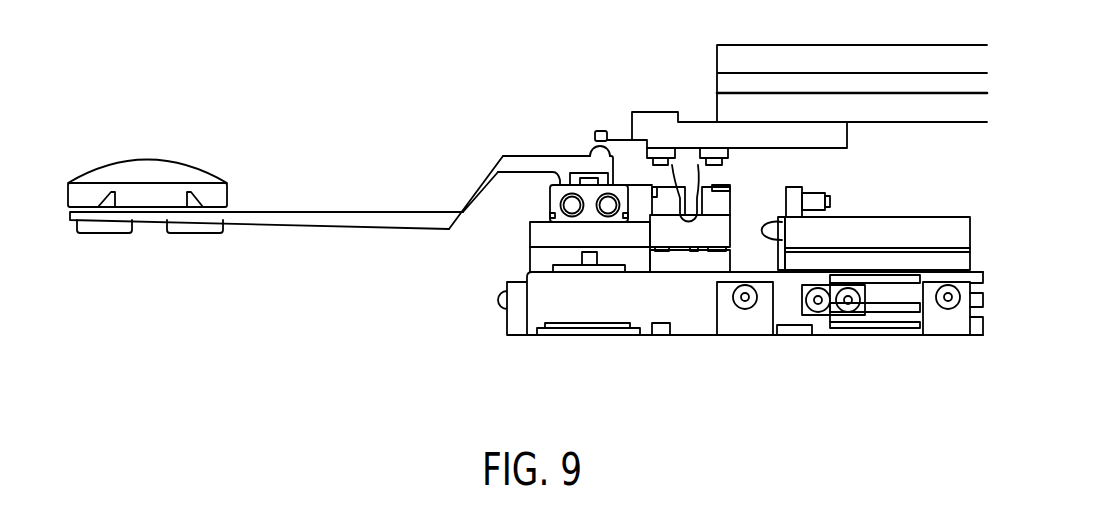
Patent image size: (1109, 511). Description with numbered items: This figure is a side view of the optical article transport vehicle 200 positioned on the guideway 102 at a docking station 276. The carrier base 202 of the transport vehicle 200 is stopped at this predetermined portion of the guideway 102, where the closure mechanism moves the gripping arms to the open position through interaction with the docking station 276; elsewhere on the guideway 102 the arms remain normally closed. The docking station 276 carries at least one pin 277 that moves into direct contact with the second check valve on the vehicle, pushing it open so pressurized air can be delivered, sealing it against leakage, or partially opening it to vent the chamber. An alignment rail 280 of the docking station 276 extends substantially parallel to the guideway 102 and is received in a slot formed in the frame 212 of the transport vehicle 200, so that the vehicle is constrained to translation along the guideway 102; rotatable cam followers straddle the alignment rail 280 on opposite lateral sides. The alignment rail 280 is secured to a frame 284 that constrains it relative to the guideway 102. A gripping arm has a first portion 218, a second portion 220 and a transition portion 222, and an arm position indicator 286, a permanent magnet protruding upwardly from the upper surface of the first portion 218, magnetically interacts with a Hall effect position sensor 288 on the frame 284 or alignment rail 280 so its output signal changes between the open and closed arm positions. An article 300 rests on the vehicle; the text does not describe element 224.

The guideway 102 is at (587, 307).
The transport vehicle 200 is at (503, 93).
The carrier base 202 is at (537, 228).
The frame 212 is at (289, 212).
The first portion 218 is at (512, 162).
The second portion 220 is at (377, 208).
The transition portion 222 is at (483, 177).
The alignment feature 224 is at (196, 186).
The docking station 276 is at (855, 196).
The pin 277 is at (768, 232).
The alignment rail 280 is at (690, 186).
The frame 284 is at (700, 121).
The arm position indicator 286 is at (590, 152).
The position sensor 288 is at (603, 130).
The lens module 300 is at (152, 158).